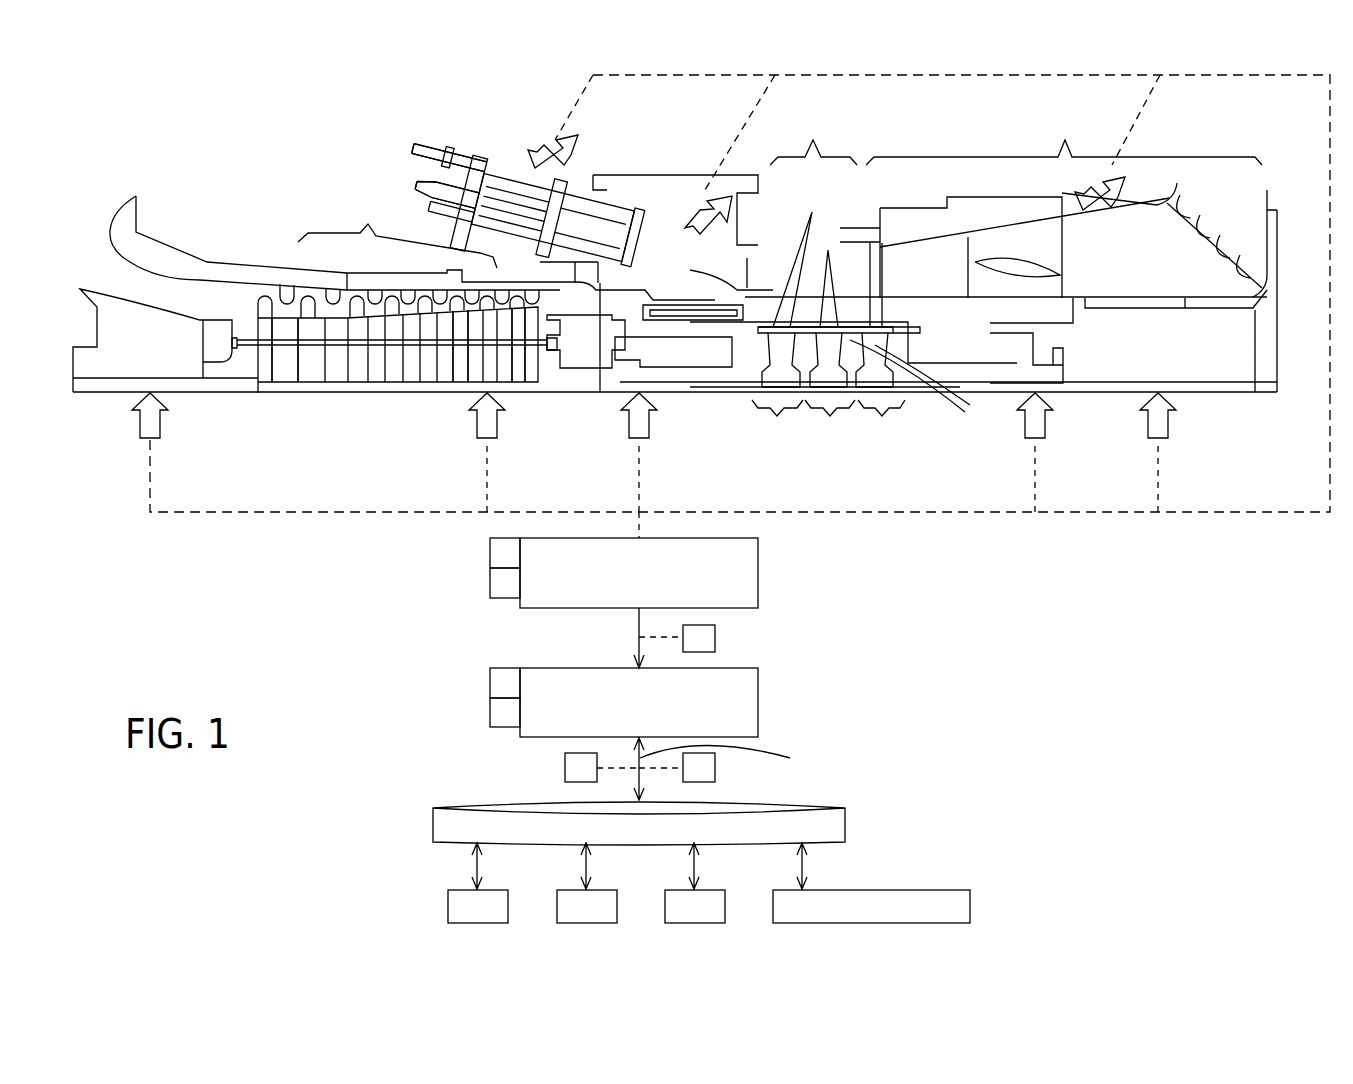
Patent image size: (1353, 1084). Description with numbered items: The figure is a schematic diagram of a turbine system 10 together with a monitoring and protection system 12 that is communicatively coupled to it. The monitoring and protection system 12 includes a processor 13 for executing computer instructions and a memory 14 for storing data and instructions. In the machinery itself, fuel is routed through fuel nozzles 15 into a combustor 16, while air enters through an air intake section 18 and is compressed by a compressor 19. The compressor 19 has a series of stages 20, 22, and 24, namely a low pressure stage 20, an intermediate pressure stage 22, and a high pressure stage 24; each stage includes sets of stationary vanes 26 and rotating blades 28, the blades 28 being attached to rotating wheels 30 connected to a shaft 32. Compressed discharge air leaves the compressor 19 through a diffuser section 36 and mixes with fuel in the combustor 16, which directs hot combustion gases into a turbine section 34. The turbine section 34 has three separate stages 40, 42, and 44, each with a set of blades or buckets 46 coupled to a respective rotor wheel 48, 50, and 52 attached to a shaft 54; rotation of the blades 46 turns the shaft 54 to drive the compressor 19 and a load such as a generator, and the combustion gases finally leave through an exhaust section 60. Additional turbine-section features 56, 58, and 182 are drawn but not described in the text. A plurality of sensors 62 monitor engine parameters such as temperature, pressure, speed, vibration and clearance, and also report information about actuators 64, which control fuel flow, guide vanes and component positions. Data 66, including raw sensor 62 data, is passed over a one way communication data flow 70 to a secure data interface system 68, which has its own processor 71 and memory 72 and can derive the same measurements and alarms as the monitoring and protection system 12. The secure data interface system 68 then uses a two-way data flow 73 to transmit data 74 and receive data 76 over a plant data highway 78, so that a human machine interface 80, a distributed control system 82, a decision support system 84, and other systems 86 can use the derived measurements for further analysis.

The turbine system 10 is at (629, 126).
The monitoring and protection system 12 is at (758, 575).
The processor 13 is at (490, 556).
The memory 14 is at (490, 580).
The fuel nozzles 15 is at (517, 208).
The combustor 16 is at (380, 172).
The air intake section 18 is at (130, 293).
The compressor 19 is at (397, 232).
The low pressure stage 20 is at (397, 408).
The intermediate pressure stage 22 is at (465, 408).
The high pressure stage 24 is at (513, 408).
The stationary vanes 26 is at (287, 294).
The blades 28 is at (252, 299).
The rotating wheels 30 is at (257, 375).
The shaft 32 is at (282, 345).
The turbine section 34 is at (978, 247).
The diffuser section 36 is at (640, 305).
The high pressure stage 40 is at (777, 425).
The intermediate pressure stage 42 is at (830, 425).
The low pressure stage 44 is at (881, 425).
The blades or buckets 46 is at (812, 211).
The rotor wheel 48 is at (757, 378).
The rotor wheel 50 is at (818, 380).
The rotor wheel 52 is at (862, 380).
The shaft 54 is at (700, 382).
The turbine shroud 56 is at (848, 258).
The turbine rotor 58 is at (966, 410).
The exhaust section 60 is at (1071, 249).
The sensors 62 is at (692, 200).
The actuators 64 is at (572, 150).
The data 66 is at (715, 640).
The secure data interface system 68 is at (758, 706).
The one way communication data flow 70 is at (639, 634).
The processor 71 is at (490, 684).
The memory 72 is at (490, 710).
The two-way data flow 73 is at (727, 768).
The data 74 is at (715, 770).
The data 76 is at (565, 768).
The plant data highway 78 is at (433, 820).
The human machine interface 80 is at (448, 906).
The distributed control system 82 is at (565, 890).
The decision support system 84 is at (673, 890).
The other systems 86 is at (970, 900).
The turbine shroud 182 is at (877, 310).